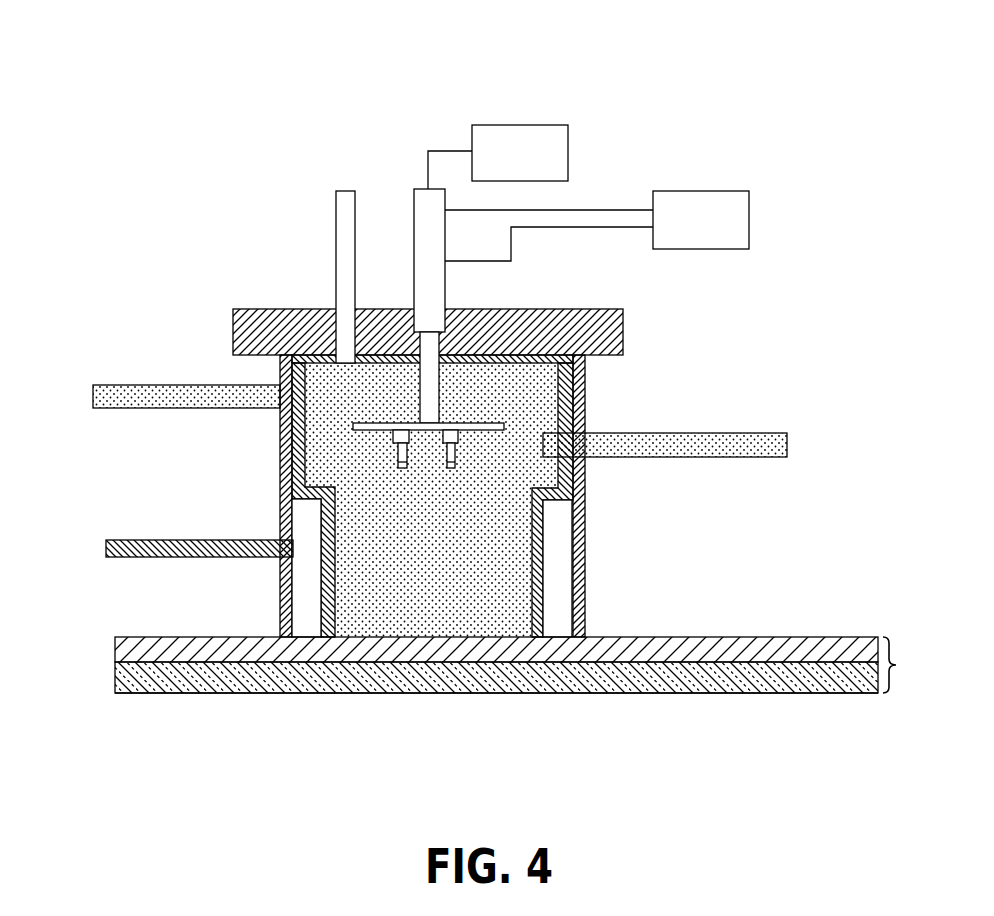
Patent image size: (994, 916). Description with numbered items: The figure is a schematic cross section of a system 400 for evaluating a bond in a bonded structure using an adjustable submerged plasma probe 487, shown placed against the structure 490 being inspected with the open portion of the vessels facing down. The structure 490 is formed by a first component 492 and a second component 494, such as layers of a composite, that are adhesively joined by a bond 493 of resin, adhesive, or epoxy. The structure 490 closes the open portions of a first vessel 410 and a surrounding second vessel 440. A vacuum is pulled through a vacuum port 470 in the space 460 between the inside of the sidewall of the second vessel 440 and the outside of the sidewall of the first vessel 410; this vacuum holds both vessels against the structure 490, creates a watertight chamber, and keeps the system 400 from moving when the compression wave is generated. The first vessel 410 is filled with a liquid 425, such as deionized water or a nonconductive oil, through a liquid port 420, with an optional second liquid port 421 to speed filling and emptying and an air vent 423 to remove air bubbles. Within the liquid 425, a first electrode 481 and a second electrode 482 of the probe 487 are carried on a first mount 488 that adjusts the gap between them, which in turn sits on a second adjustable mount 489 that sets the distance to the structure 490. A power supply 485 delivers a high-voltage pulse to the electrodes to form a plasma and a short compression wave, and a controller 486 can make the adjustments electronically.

The system for evaluating a bond 400 is at (468, 69).
The first vessel 410 is at (543, 522).
The liquid port 420 is at (773, 432).
The second liquid port 421 is at (92, 398).
The air vent 423 is at (336, 200).
The liquid 425 is at (363, 482).
The second vessel 440 is at (585, 568).
The space 460 is at (560, 620).
The vacuum port 470 is at (106, 548).
The first electrode 481 is at (452, 479).
The second electrode 482 is at (400, 479).
The power supply 485 is at (684, 233).
The controller 486 is at (501, 166).
The adjustable submerged plasma probe 487 is at (411, 181).
The first mount 488 is at (480, 415).
The second adjustable mount 489 is at (404, 345).
The structure 490 is at (908, 665).
The first component 492 is at (115, 648).
The bond 493 is at (115, 663).
The second component 494 is at (115, 692).